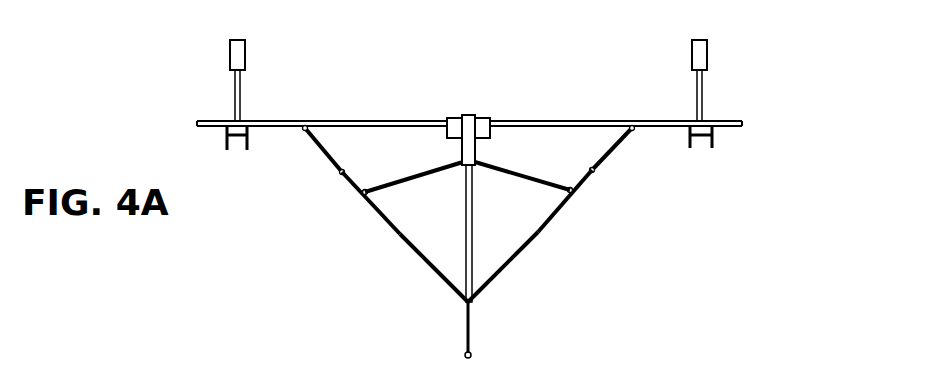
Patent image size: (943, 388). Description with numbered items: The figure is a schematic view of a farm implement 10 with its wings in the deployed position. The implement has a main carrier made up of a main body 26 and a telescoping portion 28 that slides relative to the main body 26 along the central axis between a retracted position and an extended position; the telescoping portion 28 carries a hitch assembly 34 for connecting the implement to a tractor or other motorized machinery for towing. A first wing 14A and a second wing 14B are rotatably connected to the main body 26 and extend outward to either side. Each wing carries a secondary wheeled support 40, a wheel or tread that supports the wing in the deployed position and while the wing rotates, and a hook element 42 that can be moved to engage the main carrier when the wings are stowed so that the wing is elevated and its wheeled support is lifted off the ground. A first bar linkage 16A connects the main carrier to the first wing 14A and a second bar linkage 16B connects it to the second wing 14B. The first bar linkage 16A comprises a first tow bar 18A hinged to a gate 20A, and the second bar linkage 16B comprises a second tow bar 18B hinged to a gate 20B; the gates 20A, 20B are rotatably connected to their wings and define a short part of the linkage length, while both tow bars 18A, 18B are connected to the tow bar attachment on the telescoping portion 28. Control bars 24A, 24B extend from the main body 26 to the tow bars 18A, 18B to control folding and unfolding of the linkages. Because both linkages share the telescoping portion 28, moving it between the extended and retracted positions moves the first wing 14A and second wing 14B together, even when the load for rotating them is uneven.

The farm implement 10 is at (177, 76).
The first wing 14A is at (727, 121).
The second wing 14B is at (200, 120).
The first bar linkage 16A is at (571, 206).
The second bar linkage 16B is at (371, 214).
The first tow bar 18A is at (518, 252).
The second tow bar 18B is at (415, 252).
The gate 20A is at (608, 160).
The gate 20B is at (323, 150).
The control bar 24A is at (493, 164).
The control bar 24B is at (433, 167).
The main body 26 is at (465, 195).
The telescoping portion 28 is at (465, 320).
The hitch assembly 34 is at (472, 354).
The secondary wheeled support 40 is at (707, 50).
The hook element 42 is at (712, 150).